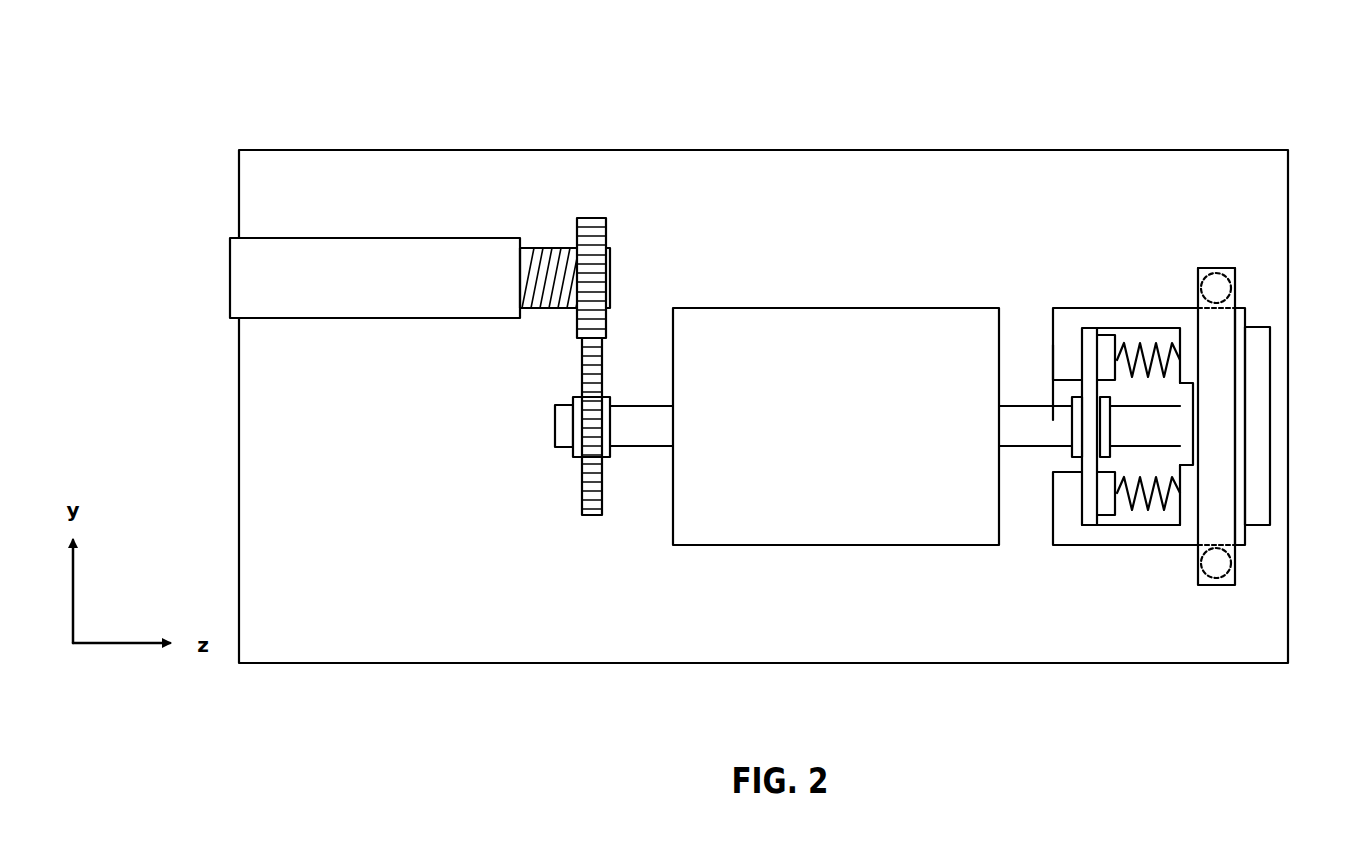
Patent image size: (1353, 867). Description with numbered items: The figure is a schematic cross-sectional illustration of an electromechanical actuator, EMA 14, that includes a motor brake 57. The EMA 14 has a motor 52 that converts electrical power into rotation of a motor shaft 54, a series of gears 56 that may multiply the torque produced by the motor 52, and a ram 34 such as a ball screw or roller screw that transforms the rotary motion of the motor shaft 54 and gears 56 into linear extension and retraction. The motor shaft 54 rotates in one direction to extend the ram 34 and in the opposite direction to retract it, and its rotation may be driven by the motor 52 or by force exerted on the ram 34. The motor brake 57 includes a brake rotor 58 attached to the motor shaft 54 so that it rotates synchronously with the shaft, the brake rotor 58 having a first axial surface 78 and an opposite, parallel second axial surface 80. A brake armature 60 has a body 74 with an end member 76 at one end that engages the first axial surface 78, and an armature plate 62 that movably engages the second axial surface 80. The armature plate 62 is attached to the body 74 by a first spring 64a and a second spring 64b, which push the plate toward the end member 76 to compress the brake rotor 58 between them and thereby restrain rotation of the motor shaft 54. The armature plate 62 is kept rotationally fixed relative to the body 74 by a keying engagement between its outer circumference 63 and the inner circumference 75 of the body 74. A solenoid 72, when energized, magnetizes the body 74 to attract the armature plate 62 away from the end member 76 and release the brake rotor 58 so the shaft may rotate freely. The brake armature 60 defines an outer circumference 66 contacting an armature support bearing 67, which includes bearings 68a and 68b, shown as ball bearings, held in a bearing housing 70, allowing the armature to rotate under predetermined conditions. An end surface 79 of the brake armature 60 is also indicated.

The EMA 14 is at (262, 118).
The ram 34 is at (240, 288).
The motor 52 is at (790, 522).
The motor shaft 54 is at (665, 427).
The series of gears 56 is at (640, 280).
The motor brake 57 is at (1080, 235).
The brake rotor 58 is at (1090, 462).
The brake armature 60 is at (1065, 365).
The armature plate 62 is at (1107, 507).
The outer circumference 63 is at (1104, 336).
The first spring 64a is at (1163, 350).
The second spring 64b is at (1168, 505).
The outer circumference 66 is at (1198, 292).
The armature support bearing 67 is at (1213, 262).
The bearing 68a is at (1218, 285).
The bearing 68b is at (1217, 557).
The bearing housing 70 is at (1220, 505).
The solenoid 72 is at (1257, 433).
The body 74 is at (1190, 533).
The inner circumference 75 is at (1130, 527).
The end member 76 is at (1052, 345).
The first axial surface 78 is at (1082, 384).
The end surface 79 is at (1247, 315).
The second axial surface 80 is at (1102, 384).